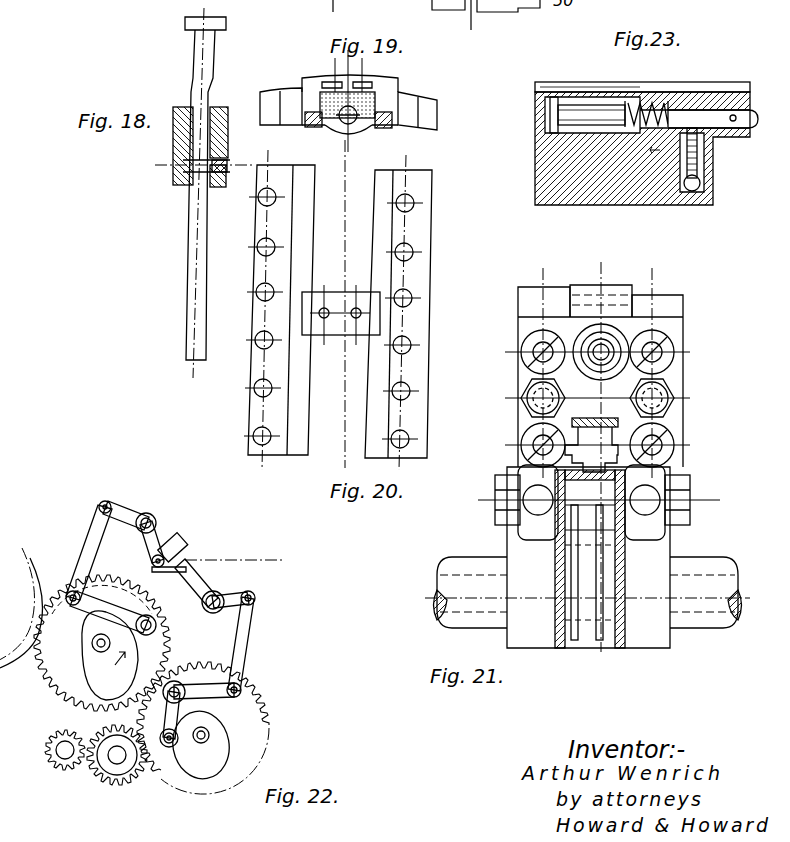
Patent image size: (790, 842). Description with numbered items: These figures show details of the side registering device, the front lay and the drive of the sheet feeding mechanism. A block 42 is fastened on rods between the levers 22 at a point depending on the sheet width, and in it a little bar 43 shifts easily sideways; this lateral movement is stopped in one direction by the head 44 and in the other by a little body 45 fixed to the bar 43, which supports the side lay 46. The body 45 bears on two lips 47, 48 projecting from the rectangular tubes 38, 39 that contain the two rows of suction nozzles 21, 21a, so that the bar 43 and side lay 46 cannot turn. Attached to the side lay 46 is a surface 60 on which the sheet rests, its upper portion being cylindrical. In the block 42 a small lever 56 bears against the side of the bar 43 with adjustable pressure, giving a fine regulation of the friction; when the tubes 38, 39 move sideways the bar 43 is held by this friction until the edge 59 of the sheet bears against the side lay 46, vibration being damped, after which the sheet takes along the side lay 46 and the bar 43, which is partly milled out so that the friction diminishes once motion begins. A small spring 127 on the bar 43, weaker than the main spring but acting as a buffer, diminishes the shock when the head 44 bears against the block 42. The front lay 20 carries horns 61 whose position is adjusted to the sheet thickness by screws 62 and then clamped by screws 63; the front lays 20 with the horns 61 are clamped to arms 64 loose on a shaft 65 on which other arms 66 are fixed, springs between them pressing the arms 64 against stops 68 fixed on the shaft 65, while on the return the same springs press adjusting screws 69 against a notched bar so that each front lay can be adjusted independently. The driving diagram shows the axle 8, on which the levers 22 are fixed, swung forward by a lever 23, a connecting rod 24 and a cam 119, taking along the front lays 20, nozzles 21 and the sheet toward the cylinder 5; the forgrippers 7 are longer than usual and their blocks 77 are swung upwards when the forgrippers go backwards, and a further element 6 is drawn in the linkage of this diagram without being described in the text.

In FIG. 18, the head 44 is at (192, 20).
In FIG. 23, the head 44 is at (548, 116).
In FIG. 18, the bar 43 is at (200, 78).
In FIG. 23, the bar 43 is at (591, 115).
In FIG. 18, the block 42 is at (185, 163).
In FIG. 18, the lever 56 is at (221, 175).
In FIG. 19, the nozzles 21 is at (268, 90).
In FIG. 20, the nozzles 21 is at (256, 384).
In FIG. 19, the rectangular tube 38 is at (290, 93).
In FIG. 20, the rectangular tube 38 is at (280, 232).
In FIG. 19, the side lay 46 is at (390, 85).
In FIG. 23, the side lay 46 is at (714, 90).
In FIG. 19, the nozzles 21a is at (410, 96).
In FIG. 20, the nozzles 21a is at (414, 390).
In FIG. 19, the rectangular tube 39 is at (420, 120).
In FIG. 20, the rectangular tube 39 is at (410, 250).
In FIG. 19, the lip 47 is at (312, 124).
In FIG. 19, the body 45 is at (356, 125).
In FIG. 20, the body 45 is at (342, 332).
In FIG. 23, the body 45 is at (738, 138).
In FIG. 19, the lip 48 is at (391, 124).
In FIG. 23, the edge of the sheet 59 is at (606, 86).
In FIG. 23, the surface 60 is at (664, 91).
In FIG. 23, the spring 127 is at (625, 121).
In FIG. 21, the front lay 20 is at (540, 300).
In FIG. 21, the horns 61 is at (600, 294).
In FIG. 21, the adjusting screws 69 is at (612, 342).
In FIG. 21, the screws 63 is at (663, 420).
In FIG. 21, the screws 62 is at (622, 424).
In FIG. 21, the arms 64 is at (636, 632).
In FIG. 21, the shaft 65 is at (490, 612).
In FIG. 21, the arms 66 is at (582, 635).
In FIG. 21, the stops 68 is at (589, 594).
In FIG. 22, the roller 6 is at (158, 523).
In FIG. 22, the grippers 7 is at (102, 587).
In FIG. 22, the blocks 77 is at (190, 562).
In FIG. 22, the levers 22 is at (210, 580).
In FIG. 22, the axle 8 is at (207, 608).
In FIG. 22, the lever 23 is at (236, 606).
In FIG. 22, the connecting rod 24 is at (248, 650).
In FIG. 22, the cylinder 5 is at (102, 643).
In FIG. 22, the cam 119 is at (214, 756).